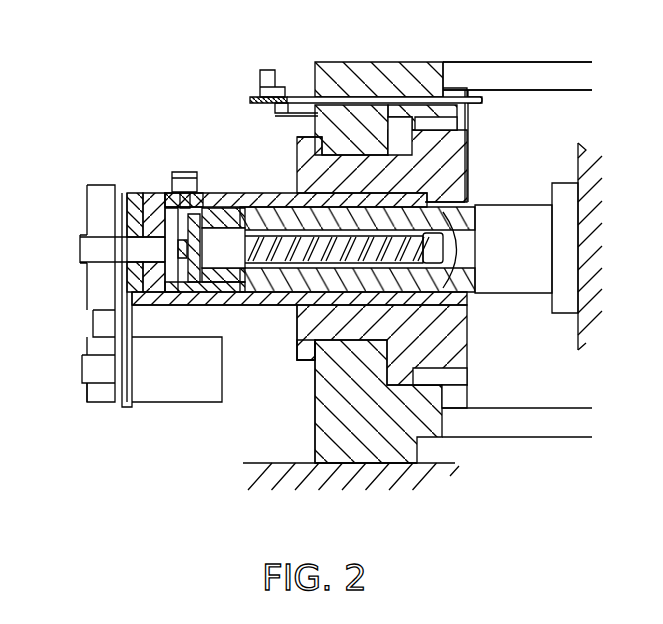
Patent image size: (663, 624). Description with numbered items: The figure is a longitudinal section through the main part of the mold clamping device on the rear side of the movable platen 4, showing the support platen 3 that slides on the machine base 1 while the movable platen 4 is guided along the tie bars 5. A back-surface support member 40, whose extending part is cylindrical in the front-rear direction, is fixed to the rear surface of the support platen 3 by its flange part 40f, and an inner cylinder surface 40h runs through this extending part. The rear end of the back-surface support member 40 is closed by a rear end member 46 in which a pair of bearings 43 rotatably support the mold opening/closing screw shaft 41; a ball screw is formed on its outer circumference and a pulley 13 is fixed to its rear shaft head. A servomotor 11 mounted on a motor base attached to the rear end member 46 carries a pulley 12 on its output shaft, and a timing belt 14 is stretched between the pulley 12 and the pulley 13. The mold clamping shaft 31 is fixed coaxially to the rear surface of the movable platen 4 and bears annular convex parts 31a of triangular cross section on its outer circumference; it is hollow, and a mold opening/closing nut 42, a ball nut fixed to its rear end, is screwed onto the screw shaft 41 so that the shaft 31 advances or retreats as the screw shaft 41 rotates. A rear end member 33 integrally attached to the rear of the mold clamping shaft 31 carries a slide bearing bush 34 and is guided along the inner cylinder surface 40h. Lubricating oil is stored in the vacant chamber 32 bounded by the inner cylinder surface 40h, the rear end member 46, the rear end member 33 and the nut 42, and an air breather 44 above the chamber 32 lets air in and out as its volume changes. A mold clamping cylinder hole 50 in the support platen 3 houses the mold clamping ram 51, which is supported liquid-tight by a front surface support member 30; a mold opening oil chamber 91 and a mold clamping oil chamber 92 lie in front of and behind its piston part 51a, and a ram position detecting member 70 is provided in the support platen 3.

The machine base 1 is at (265, 461).
The support platen 3 is at (425, 62).
The movable platen 4 is at (585, 337).
The tie bars 5 is at (553, 72).
The servomotor 11 is at (183, 404).
The pulley 12 is at (85, 395).
The pulley 13 is at (85, 277).
The timing belt 14 is at (92, 325).
The front surface support member 30 is at (462, 400).
The mold clamping shaft 31 is at (515, 290).
The annular convex parts 31a is at (467, 345).
The vacant chamber 32 is at (200, 322).
The rear end member 33 is at (198, 193).
The slide bearing bush 34 is at (205, 190).
The back-surface support member 40 is at (277, 192).
The flange part 40f is at (305, 135).
The inner cylinder surface 40h is at (308, 359).
The mold opening/closing screw shaft 41 is at (300, 307).
The mold opening/closing nut 42 is at (225, 206).
The bearings 43 is at (190, 214).
The air breather 44 is at (170, 208).
The rear end member 46 is at (88, 192).
The mold clamping cylinder hole 50 is at (440, 415).
The mold clamping ram 51 is at (472, 103).
The piston part 51a is at (403, 97).
The ram position detecting member 70 is at (243, 80).
The mold opening oil chamber 91 is at (483, 63).
The mold clamping oil chamber 92 is at (370, 100).